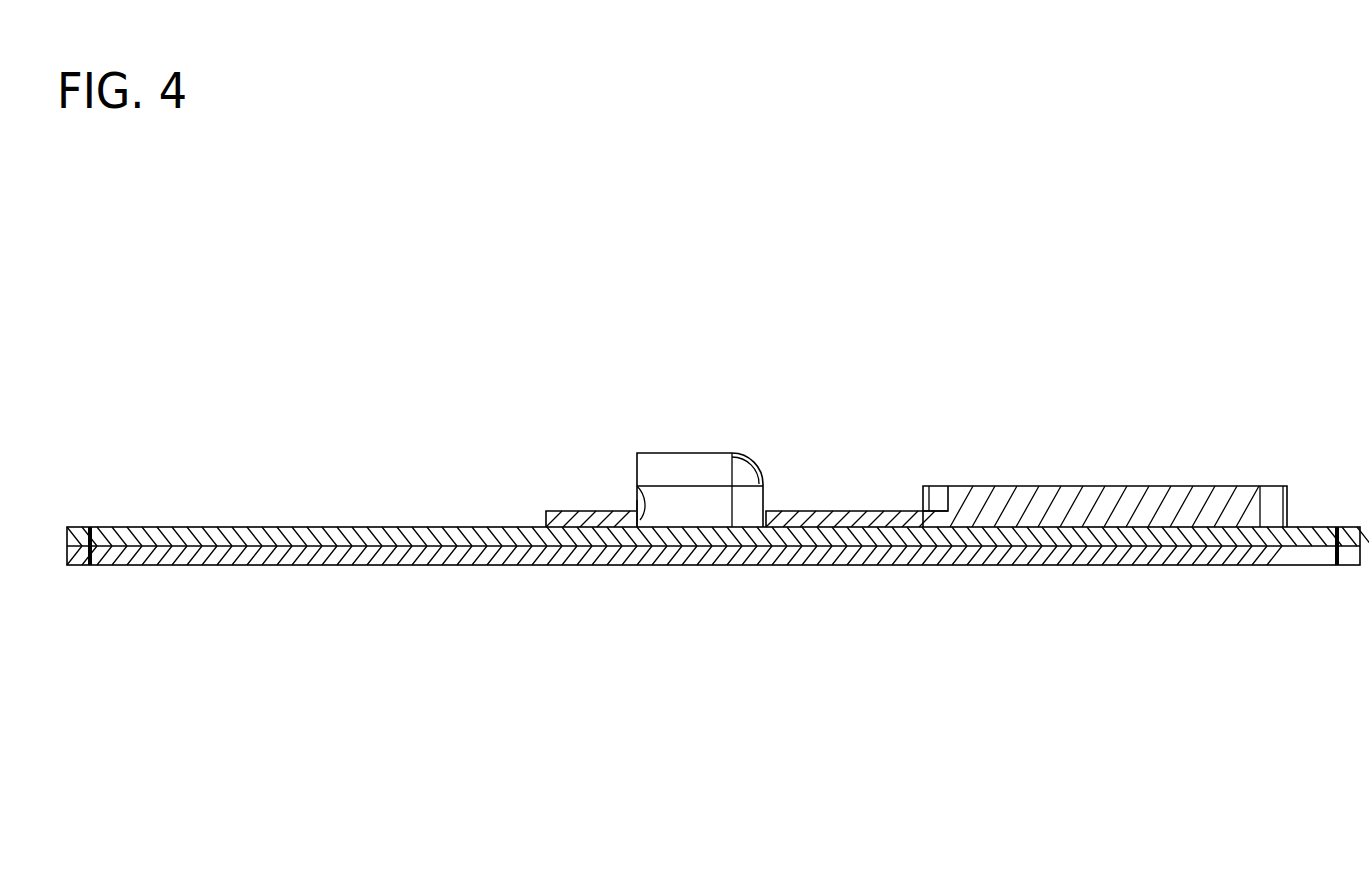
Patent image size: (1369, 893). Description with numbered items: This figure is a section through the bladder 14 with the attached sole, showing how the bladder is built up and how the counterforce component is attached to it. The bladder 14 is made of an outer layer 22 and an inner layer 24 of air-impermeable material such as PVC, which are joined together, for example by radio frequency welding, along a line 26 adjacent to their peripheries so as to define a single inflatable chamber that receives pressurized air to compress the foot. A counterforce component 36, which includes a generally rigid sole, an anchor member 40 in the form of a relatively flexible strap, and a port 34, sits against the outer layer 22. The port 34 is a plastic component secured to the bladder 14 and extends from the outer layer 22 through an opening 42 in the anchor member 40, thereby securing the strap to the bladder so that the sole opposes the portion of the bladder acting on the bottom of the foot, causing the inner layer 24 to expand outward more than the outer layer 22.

The bladder 14 is at (716, 548).
The outer layer 22 is at (129, 527).
The inner layer 24 is at (117, 563).
The line 26 is at (91, 527).
The port 34 is at (713, 465).
The counterforce component 36 is at (1128, 474).
The anchor member 40 is at (852, 512).
The opening 42 is at (640, 490).